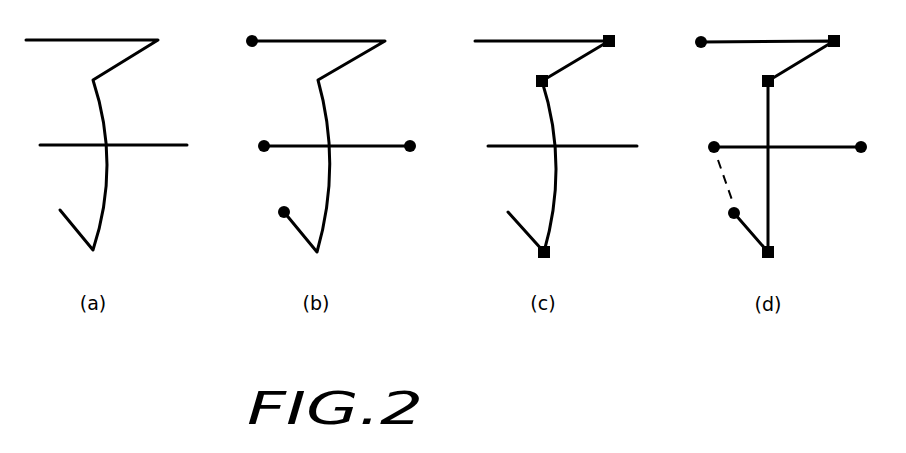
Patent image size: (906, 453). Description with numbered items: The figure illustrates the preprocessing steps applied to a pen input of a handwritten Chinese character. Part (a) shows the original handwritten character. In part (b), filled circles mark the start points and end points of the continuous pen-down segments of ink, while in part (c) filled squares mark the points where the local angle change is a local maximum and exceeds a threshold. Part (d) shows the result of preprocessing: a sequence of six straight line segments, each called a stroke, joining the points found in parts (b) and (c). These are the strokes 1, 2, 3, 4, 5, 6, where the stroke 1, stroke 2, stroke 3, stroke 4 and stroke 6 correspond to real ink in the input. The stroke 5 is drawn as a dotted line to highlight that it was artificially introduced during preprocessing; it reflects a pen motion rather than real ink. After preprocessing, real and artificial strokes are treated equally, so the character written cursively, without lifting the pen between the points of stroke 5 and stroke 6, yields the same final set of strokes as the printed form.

The stroke 1 is at (707, 32).
The stroke 2 is at (834, 53).
The stroke 3 is at (758, 83).
The stroke 4 is at (777, 255).
The artificial stroke 5 is at (725, 215).
The stroke 6 is at (787, 136).